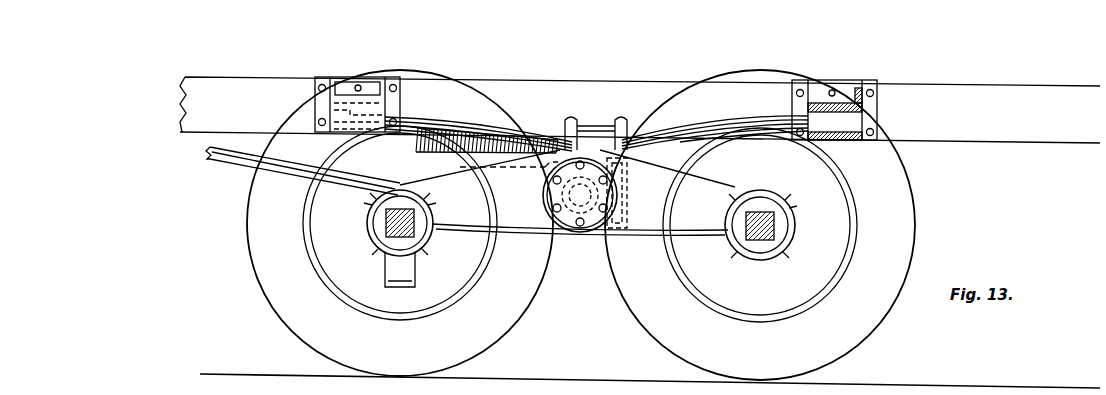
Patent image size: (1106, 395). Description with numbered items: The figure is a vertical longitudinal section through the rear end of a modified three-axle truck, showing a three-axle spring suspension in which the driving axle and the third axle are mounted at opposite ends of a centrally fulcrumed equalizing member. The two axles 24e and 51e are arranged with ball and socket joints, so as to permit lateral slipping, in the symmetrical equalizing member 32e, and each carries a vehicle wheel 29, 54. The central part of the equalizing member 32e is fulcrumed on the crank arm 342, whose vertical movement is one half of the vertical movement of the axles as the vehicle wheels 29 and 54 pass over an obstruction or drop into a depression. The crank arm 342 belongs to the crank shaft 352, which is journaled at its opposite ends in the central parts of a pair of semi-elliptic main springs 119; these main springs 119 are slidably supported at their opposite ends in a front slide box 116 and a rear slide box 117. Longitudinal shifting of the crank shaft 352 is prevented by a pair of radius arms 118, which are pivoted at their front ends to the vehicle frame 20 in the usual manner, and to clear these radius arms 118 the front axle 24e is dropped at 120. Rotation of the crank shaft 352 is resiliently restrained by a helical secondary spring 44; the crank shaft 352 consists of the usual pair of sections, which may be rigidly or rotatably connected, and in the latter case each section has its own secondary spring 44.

The vehicle frame 20 is at (183, 97).
The front slide box 116 is at (349, 92).
The rear slide box 117 is at (843, 100).
The semi-elliptic main spring 119 is at (688, 130).
The helical secondary spring 44 is at (420, 147).
The radius arm 118 is at (220, 160).
The front axle 24e is at (385, 225).
The third axle 51e is at (775, 226).
The drop of front axle 120 is at (390, 272).
The crank arm 342 is at (600, 226).
The equalizing member 32e is at (578, 234).
The crank shaft 352 is at (615, 190).
The vehicle wheel 29 is at (470, 345).
The vehicle wheel 54 is at (820, 355).